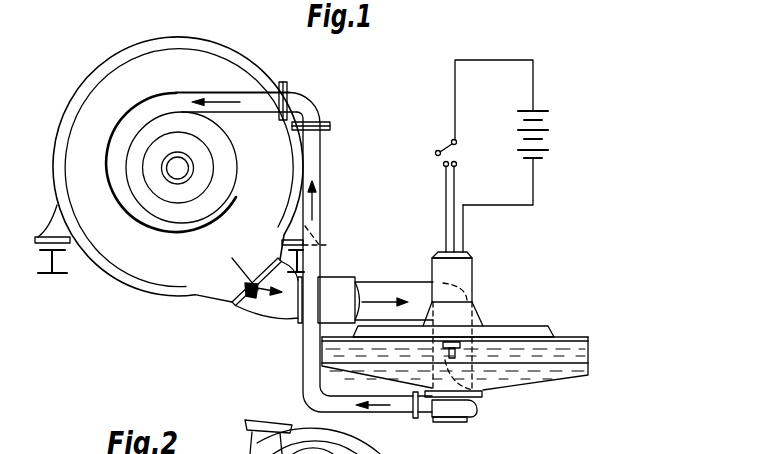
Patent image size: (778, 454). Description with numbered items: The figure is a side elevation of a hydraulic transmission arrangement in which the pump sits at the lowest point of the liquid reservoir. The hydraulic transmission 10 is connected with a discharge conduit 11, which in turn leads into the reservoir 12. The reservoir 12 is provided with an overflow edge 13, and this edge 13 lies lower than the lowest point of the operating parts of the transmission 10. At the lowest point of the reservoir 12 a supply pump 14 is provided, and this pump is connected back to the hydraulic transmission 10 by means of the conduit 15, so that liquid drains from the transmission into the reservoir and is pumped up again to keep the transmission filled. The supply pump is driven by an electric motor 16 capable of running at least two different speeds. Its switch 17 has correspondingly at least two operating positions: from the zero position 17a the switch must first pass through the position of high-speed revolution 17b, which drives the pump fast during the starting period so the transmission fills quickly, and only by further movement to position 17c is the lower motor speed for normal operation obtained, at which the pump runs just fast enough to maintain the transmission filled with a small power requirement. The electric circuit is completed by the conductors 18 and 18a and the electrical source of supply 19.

The hydraulic transmission 10 is at (88, 103).
The discharge conduit 11 is at (287, 308).
The reservoir 12 is at (558, 352).
The overflow edge 13 is at (456, 340).
The supply pump 14 is at (478, 408).
The conduit 15 is at (320, 195).
The electric motor 16 is at (465, 278).
The switch 17 is at (451, 142).
The zero position 17a is at (436, 155).
The position of high-speed revolution 17b is at (444, 166).
The position for lower motor speed 17c is at (456, 165).
The conductor 18 is at (455, 87).
The conductor 18a is at (533, 187).
The electrical source of supply 19 is at (548, 133).